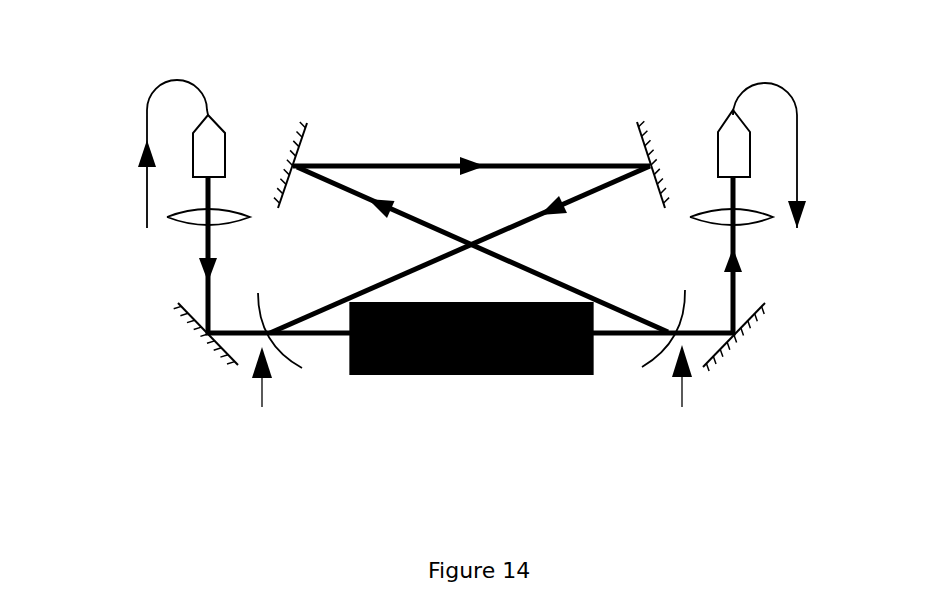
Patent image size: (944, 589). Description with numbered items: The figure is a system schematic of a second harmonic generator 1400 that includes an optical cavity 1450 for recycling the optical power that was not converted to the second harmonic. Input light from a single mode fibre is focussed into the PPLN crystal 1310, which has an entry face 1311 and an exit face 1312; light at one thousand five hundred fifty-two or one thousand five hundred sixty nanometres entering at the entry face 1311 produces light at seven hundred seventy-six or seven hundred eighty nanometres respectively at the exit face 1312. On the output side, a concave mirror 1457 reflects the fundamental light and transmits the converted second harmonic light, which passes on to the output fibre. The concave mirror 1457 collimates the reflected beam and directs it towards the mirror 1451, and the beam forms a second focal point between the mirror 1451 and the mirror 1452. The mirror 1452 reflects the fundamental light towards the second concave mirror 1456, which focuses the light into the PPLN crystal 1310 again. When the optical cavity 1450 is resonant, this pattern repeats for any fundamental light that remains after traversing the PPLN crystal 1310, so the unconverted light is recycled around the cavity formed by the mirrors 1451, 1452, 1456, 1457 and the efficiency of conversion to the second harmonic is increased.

The second harmonic generator 1400 is at (100, 82).
The optical cavity 1450 is at (490, 106).
The mirror 1451 is at (307, 126).
The mirror 1452 is at (638, 122).
The second concave mirror 1456 is at (258, 294).
The concave mirror 1457 is at (685, 292).
The PPLN crystal 1310 is at (427, 302).
The entry face 1311 is at (349, 367).
The exit face 1312 is at (594, 376).